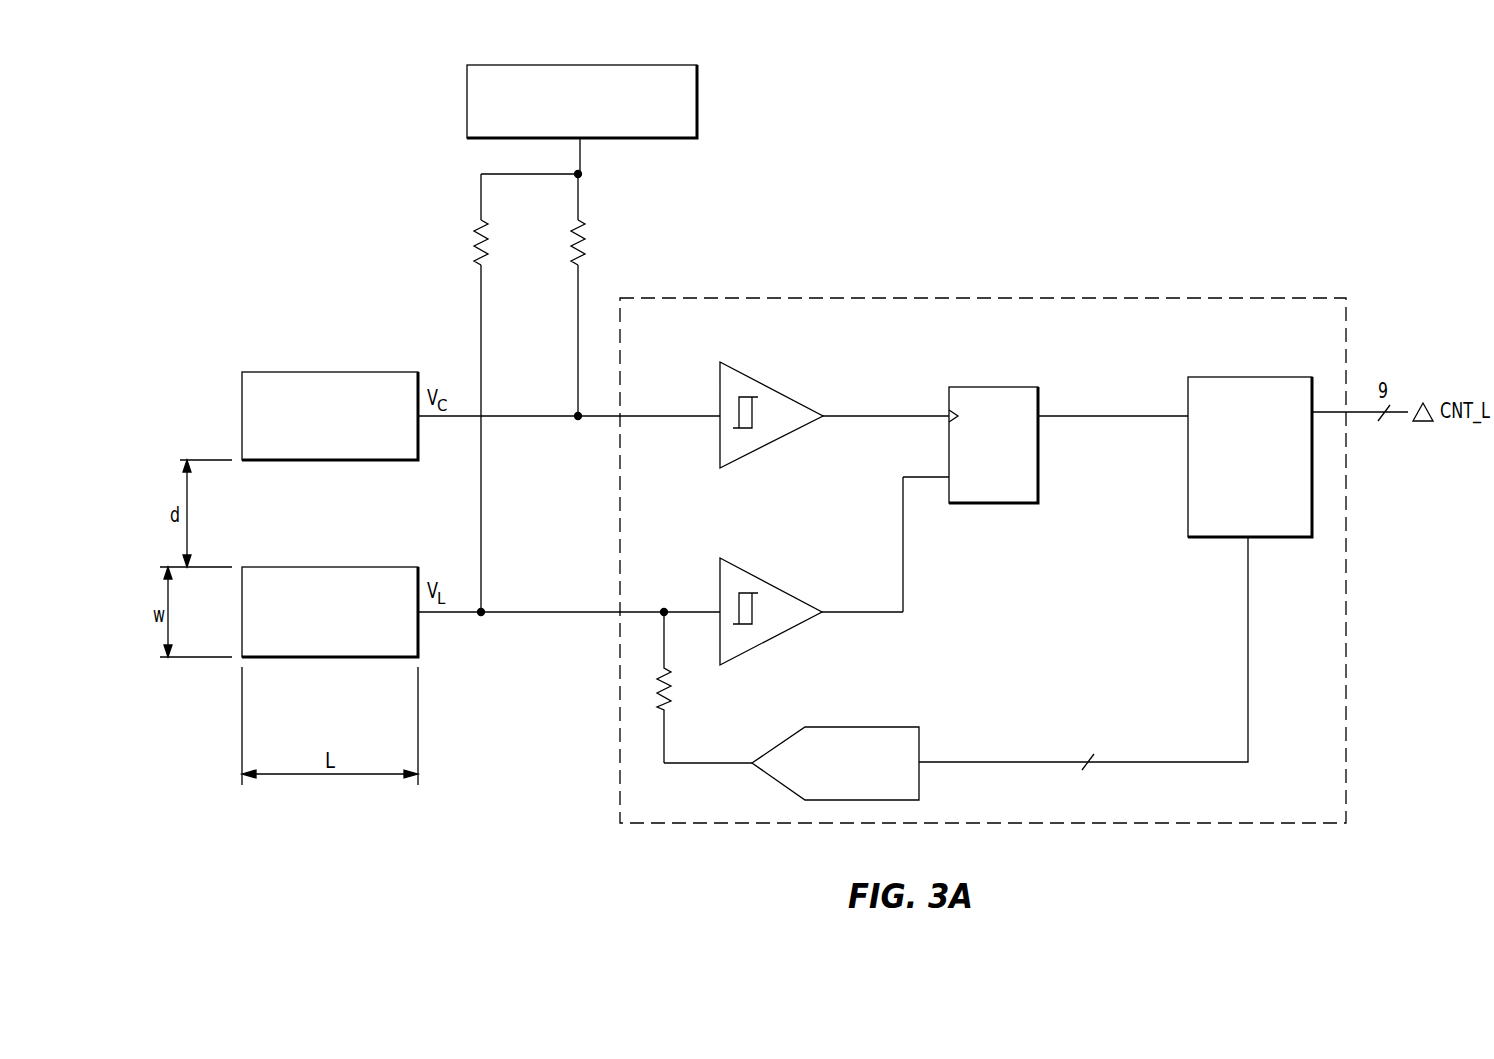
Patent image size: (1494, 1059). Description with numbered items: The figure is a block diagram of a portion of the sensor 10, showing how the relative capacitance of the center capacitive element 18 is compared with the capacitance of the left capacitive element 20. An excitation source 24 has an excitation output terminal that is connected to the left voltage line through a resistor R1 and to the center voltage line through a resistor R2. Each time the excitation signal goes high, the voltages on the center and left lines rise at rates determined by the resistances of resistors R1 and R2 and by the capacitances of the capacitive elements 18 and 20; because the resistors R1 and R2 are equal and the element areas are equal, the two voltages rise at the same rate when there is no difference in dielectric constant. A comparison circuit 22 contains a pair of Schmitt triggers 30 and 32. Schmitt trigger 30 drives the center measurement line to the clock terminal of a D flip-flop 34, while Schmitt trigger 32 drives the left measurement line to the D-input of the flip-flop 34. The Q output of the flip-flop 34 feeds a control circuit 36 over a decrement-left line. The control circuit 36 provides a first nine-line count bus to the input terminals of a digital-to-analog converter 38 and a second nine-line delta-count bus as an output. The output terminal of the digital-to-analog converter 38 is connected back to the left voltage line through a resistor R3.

The sensor 10 is at (1182, 208).
The capacitive element 18 is at (401, 371).
The capacitive element 20 is at (389, 566).
The comparison circuit 22 is at (1279, 297).
The excitation source 24 is at (697, 128).
The Schmitt trigger 30 is at (767, 380).
The Schmitt trigger 32 is at (762, 575).
The D flip-flop 34 is at (1020, 504).
The control circuit 36 is at (1188, 522).
The digital-to-analog converter 38 is at (893, 727).
The resistor R1 is at (474, 240).
The resistor R2 is at (571, 240).
The resistor R3 is at (673, 700).